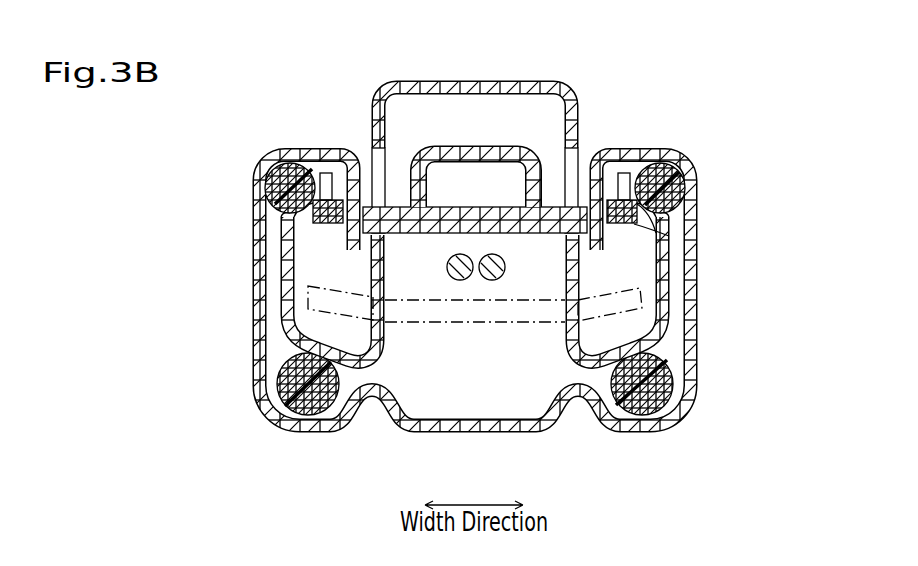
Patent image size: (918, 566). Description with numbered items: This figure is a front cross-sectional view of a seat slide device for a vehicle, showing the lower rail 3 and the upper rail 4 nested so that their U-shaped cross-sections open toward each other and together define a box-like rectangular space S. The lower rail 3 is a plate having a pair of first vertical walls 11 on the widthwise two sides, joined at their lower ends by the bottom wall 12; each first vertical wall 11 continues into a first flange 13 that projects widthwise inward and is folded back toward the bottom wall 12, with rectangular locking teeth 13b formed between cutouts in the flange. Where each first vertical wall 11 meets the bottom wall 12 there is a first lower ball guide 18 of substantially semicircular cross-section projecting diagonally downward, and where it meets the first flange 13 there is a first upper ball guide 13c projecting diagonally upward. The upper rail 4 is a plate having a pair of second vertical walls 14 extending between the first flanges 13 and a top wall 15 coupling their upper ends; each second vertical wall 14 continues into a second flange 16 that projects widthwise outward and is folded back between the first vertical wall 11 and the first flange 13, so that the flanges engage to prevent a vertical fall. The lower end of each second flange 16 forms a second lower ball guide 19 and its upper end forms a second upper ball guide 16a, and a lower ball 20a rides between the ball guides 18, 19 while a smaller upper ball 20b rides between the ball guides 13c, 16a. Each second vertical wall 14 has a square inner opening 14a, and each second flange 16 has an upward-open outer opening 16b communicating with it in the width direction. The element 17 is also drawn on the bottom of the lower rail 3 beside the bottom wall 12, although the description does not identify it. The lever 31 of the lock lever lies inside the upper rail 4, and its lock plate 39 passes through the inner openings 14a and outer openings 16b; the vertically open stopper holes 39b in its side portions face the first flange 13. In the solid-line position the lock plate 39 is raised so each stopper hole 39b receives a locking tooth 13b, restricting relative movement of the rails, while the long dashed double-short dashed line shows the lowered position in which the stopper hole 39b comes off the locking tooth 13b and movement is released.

The lower rail 3 is at (476, 320).
The upper rail 4 is at (478, 132).
The first vertical wall 11 is at (255, 320).
The bottom wall 12 is at (425, 436).
The first flange 13 is at (362, 195).
The locking tooth 13b is at (475, 291).
The first upper ball guide 13c is at (253, 178).
The second vertical wall 14 is at (372, 134).
The inner opening 14a is at (561, 320).
The top wall 15 is at (510, 80).
The second flange 16 is at (280, 293).
The second upper ball guide 16a is at (312, 170).
The outer opening 16b is at (683, 235).
The protrusion 17 is at (395, 392).
The first lower ball guide 18 is at (285, 402).
The second lower ball guide 19 is at (283, 353).
The lower ball 20a is at (250, 372).
The upper ball 20b is at (253, 210).
The lever 31 is at (541, 197).
The lock plate 39 is at (412, 233).
The stopper hole 39b is at (320, 224).
The space S is at (485, 299).